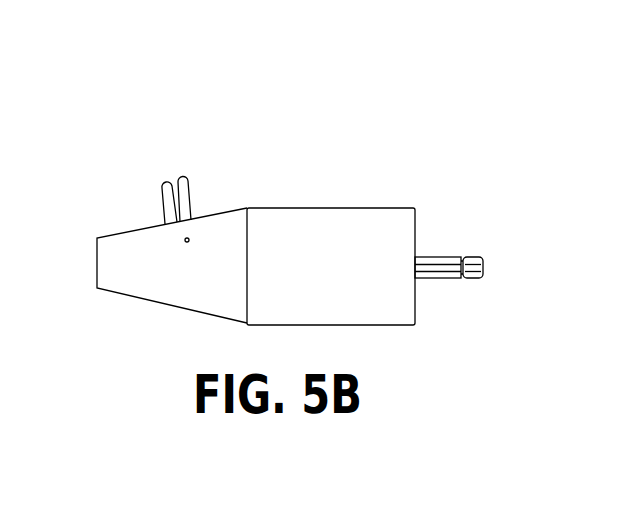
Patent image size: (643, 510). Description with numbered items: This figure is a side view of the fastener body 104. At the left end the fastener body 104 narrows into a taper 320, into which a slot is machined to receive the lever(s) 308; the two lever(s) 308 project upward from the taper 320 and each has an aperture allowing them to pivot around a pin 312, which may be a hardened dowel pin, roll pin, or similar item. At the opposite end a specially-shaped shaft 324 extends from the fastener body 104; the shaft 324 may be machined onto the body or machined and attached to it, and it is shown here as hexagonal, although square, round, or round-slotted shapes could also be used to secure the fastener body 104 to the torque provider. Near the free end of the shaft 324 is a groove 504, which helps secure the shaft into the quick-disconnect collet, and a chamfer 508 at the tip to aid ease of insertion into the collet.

The fastener body 104 is at (349, 192).
The lever(s) 308 is at (168, 172).
The pin 312 is at (195, 229).
The taper 320 is at (110, 228).
The shaft 324 is at (440, 277).
The groove 504 is at (467, 247).
The chamfer 508 is at (490, 244).